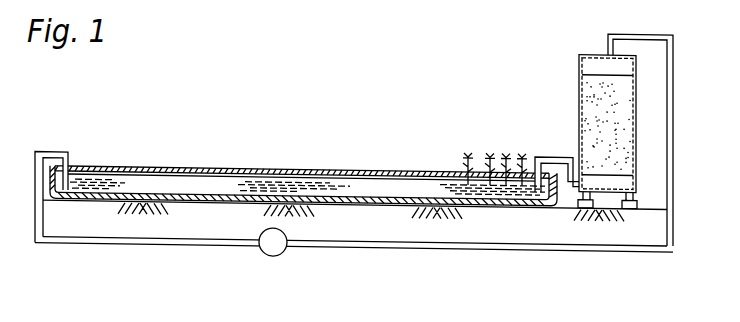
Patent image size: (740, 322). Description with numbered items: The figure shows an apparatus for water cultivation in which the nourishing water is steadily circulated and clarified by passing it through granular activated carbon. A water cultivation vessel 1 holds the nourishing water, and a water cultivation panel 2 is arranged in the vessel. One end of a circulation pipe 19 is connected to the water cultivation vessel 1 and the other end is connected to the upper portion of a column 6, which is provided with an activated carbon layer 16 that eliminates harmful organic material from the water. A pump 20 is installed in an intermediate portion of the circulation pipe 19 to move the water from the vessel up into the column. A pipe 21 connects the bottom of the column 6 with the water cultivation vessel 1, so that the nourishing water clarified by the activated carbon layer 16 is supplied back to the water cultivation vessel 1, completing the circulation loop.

The water cultivation vessel 1 is at (386, 198).
The water cultivation panel 2 is at (432, 158).
The column 6 is at (579, 58).
The activated carbon layer 16 is at (598, 99).
The circulation pipe 19 is at (557, 242).
The pump 20 is at (273, 252).
The pipe 21 is at (554, 149).